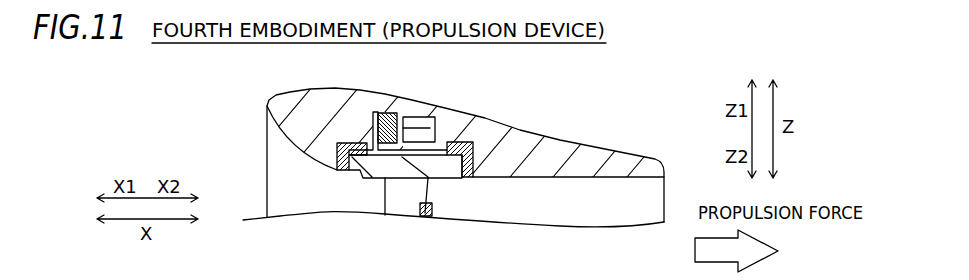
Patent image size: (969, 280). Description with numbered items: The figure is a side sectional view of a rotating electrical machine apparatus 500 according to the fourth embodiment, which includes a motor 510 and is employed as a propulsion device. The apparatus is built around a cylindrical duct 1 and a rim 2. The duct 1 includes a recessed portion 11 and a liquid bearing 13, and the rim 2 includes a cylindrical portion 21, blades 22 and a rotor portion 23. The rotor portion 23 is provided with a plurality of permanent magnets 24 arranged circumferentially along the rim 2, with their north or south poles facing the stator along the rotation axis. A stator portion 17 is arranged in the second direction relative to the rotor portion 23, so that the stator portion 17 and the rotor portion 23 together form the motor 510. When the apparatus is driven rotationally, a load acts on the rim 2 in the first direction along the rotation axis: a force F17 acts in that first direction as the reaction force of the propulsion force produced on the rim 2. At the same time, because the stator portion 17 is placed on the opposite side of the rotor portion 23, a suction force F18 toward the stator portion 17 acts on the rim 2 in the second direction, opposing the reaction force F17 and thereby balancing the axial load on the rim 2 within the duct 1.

The rotating electrical machine apparatus 500 is at (549, 95).
The motor 510 is at (478, 190).
The liquid bearing 13 is at (337, 158).
The duct 1 is at (411, 101).
The rotor portion 23 is at (376, 110).
The permanent magnets 24 is at (371, 114).
The recessed portion 11 is at (387, 112).
The stator portion 17 is at (416, 116).
The suction force F18 is at (428, 128).
The cylindrical portion 21 is at (350, 171).
The rim 2 is at (441, 177).
The blades 22 is at (430, 210).
The force F17 is at (366, 180).